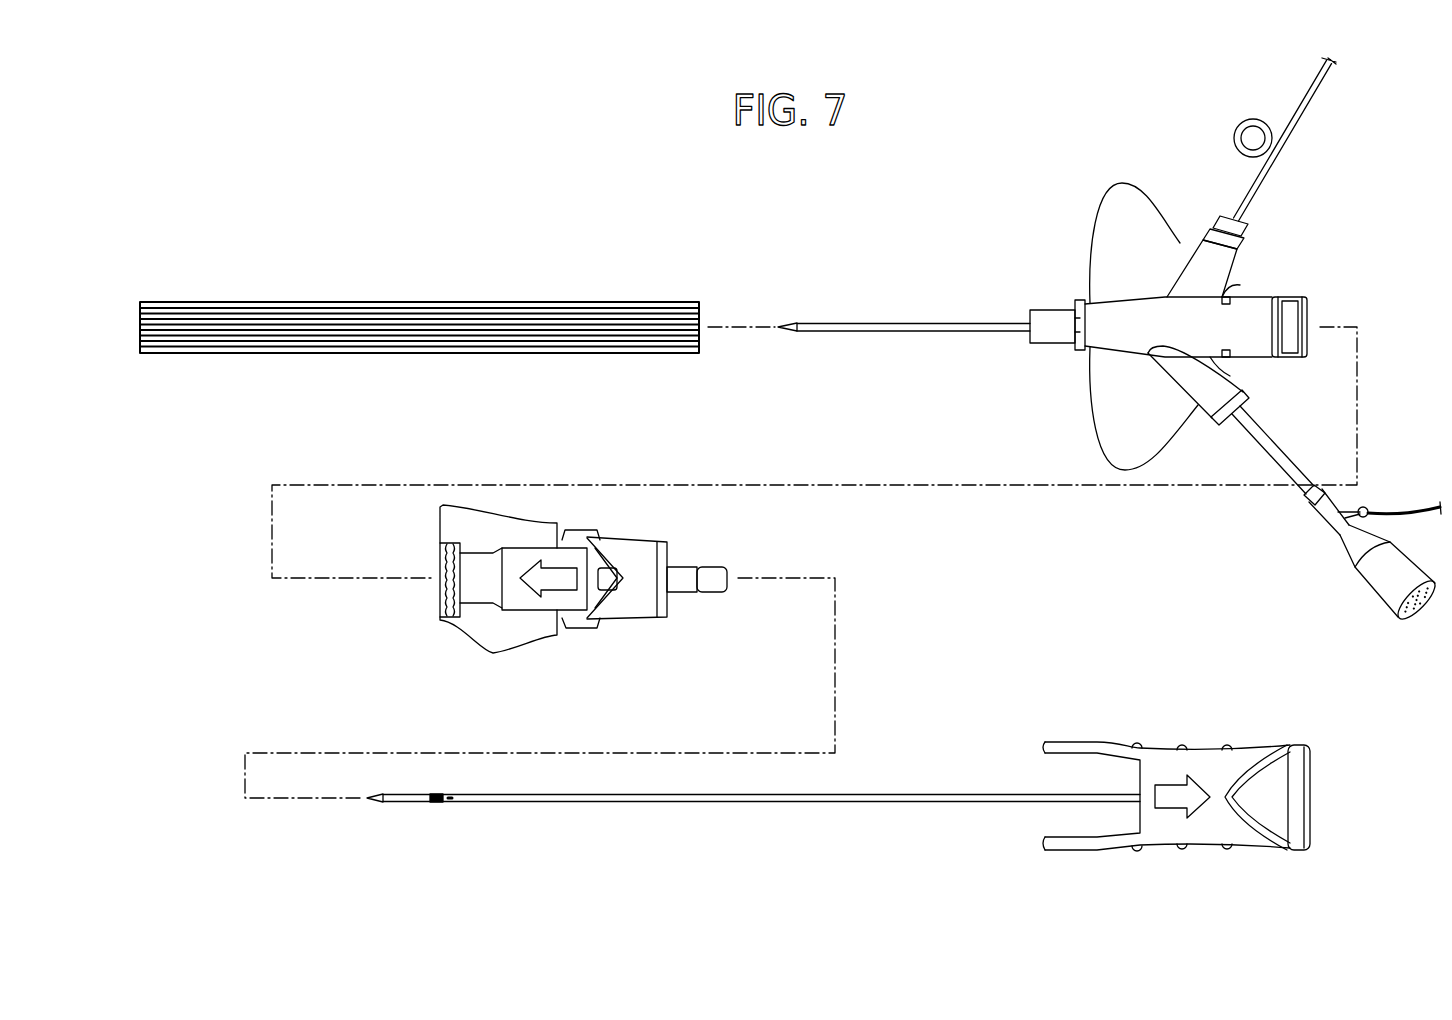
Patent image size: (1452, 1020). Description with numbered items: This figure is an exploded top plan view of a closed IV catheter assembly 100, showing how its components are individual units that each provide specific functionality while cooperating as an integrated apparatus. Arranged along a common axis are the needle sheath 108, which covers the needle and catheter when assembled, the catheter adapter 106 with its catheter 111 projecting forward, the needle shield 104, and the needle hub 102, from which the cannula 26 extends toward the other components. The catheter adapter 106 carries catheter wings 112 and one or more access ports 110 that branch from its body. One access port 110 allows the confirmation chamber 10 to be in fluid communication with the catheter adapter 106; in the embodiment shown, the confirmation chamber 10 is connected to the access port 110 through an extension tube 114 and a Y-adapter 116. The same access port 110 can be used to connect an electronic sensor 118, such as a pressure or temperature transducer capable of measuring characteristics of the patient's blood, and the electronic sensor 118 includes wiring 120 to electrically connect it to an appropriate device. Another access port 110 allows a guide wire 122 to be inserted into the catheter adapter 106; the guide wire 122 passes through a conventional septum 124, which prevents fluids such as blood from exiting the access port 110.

The catheter assembly 100 is at (456, 238).
The needle sheath 108 is at (224, 360).
The catheter 111 is at (896, 322).
The catheter adapter 106 is at (1098, 397).
The catheter wing 112 is at (1113, 208).
The access port 110 is at (1202, 240).
The septum 124 is at (1240, 227).
The guide wire 122 is at (1267, 165).
The extension tube 114 is at (1273, 447).
The Y-adapter 116 is at (1323, 508).
The electronic sensor 118 is at (1366, 507).
The wiring 120 is at (1393, 510).
The confirmation chamber 10 is at (1352, 589).
The needle shield 104 is at (634, 540).
The cannula 26 is at (565, 800).
The needle hub 102 is at (1294, 737).